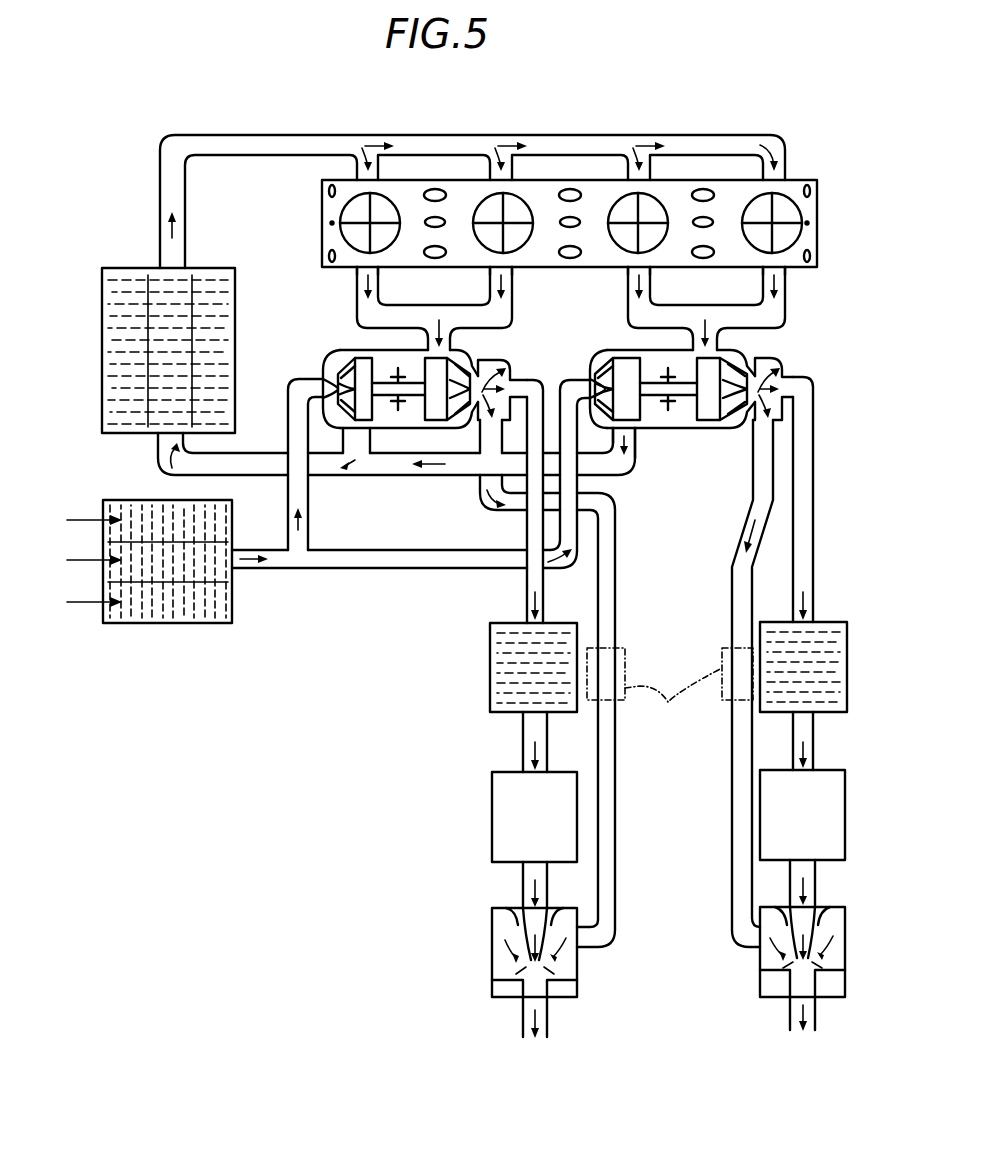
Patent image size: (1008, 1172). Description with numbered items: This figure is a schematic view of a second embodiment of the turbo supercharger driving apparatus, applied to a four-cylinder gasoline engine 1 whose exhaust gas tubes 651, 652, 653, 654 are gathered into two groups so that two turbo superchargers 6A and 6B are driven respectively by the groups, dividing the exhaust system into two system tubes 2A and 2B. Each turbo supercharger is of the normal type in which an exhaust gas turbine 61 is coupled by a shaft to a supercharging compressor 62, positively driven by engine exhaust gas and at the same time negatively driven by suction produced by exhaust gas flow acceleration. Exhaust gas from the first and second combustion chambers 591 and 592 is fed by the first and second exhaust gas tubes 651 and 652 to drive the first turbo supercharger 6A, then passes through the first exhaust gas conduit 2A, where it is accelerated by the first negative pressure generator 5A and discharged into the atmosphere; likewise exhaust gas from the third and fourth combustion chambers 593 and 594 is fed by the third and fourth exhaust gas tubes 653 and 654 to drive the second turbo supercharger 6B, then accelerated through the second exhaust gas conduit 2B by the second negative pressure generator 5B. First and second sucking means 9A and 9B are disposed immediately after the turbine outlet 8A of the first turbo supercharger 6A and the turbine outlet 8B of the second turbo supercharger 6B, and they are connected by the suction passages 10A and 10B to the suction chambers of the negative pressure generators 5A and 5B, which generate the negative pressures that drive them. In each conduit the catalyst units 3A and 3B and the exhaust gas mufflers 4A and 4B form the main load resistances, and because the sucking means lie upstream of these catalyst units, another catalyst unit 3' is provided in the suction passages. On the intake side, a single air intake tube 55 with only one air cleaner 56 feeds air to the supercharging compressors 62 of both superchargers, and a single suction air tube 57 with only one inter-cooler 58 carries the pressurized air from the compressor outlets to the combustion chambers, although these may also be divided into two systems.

The gasoline engine 1 is at (803, 178).
The first combustion chamber 591 is at (353, 210).
The second combustion chamber 592 is at (500, 207).
The third combustion chamber 593 is at (625, 207).
The fourth combustion chamber 594 is at (760, 205).
The first exhaust gas tube 651 is at (360, 273).
The second exhaust gas tube 652 is at (513, 273).
The third exhaust gas tube 653 is at (630, 280).
The fourth exhaust gas tube 654 is at (787, 280).
The suction air tube 57 is at (234, 142).
The inter-cooler 58 is at (112, 343).
The air cleaner 56 is at (177, 625).
The air intake tube 55 is at (281, 562).
The first turbo supercharger 6A is at (300, 316).
The second turbo supercharger 6B is at (564, 318).
The exhaust gas turbine 61 is at (433, 368).
The supercharging compressor 62 is at (357, 383).
The turbine outlet 8A is at (472, 407).
The first sucking means 9A is at (482, 423).
The turbine outlet 8B is at (713, 427).
The second sucking means 9B is at (747, 420).
The first exhaust gas conduit 2A is at (530, 585).
The second exhaust gas conduit 2B is at (808, 575).
The suction passage 10A is at (607, 603).
The suction passage 10B is at (738, 615).
The catalyst unit 3A is at (490, 667).
The catalyst unit 3B is at (838, 666).
The catalyst unit 3' is at (670, 693).
The exhaust gas muffler 4A is at (498, 808).
The exhaust gas muffler 4B is at (847, 810).
The first negative pressure generator 5A is at (495, 940).
The second negative pressure generator 5B is at (840, 935).